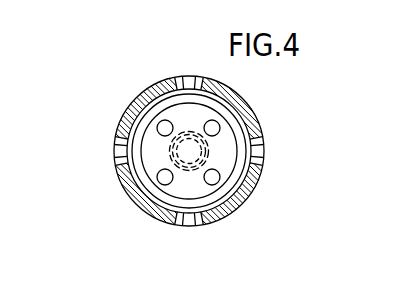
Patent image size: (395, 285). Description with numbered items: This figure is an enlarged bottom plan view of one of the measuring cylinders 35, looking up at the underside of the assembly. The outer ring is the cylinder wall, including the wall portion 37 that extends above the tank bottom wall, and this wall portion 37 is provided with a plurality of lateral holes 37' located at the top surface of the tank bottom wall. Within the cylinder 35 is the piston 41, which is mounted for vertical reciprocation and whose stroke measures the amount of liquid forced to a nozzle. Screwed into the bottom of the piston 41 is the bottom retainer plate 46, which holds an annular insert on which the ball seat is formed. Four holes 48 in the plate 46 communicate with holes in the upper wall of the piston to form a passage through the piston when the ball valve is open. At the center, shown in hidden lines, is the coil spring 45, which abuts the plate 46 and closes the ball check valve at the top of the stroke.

The measuring cylinder 35 is at (209, 232).
The wall portion 37 is at (153, 151).
The lateral holes 37' is at (165, 156).
The piston 41 is at (165, 103).
The coil spring 45 is at (203, 156).
The bottom retainer plate 46 is at (197, 170).
The holes 48 is at (163, 176).